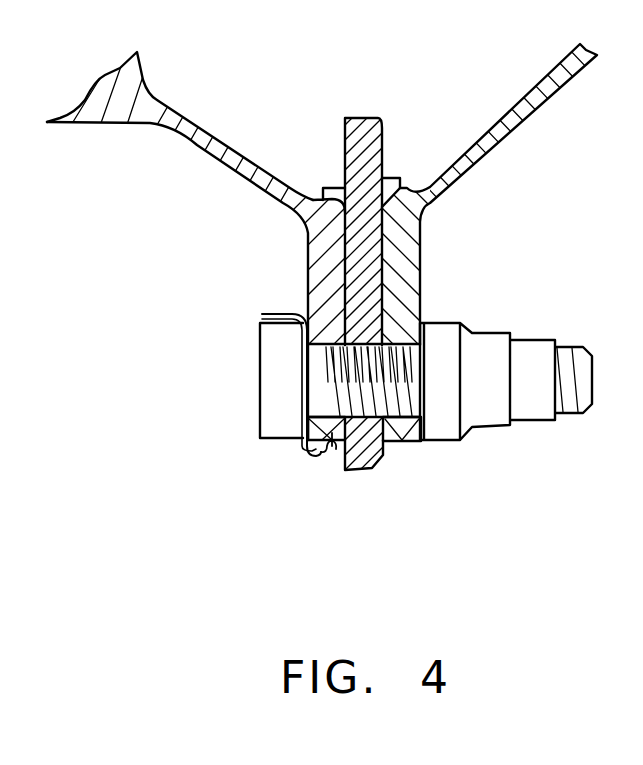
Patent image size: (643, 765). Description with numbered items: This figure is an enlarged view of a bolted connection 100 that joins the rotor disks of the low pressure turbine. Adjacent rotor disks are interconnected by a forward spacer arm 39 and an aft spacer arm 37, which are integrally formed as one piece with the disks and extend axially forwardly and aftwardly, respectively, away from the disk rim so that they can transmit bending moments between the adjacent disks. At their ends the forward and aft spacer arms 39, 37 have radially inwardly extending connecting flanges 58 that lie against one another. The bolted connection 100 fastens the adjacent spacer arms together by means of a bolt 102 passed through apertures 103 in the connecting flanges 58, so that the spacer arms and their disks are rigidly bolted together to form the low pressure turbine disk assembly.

The bolted connection 100 is at (169, 436).
The aft spacer arm 37 is at (227, 167).
The forward spacer arm 39 is at (513, 130).
The connecting flange 58 is at (330, 448).
The bolt 102 is at (280, 372).
The aperture 103 is at (400, 358).